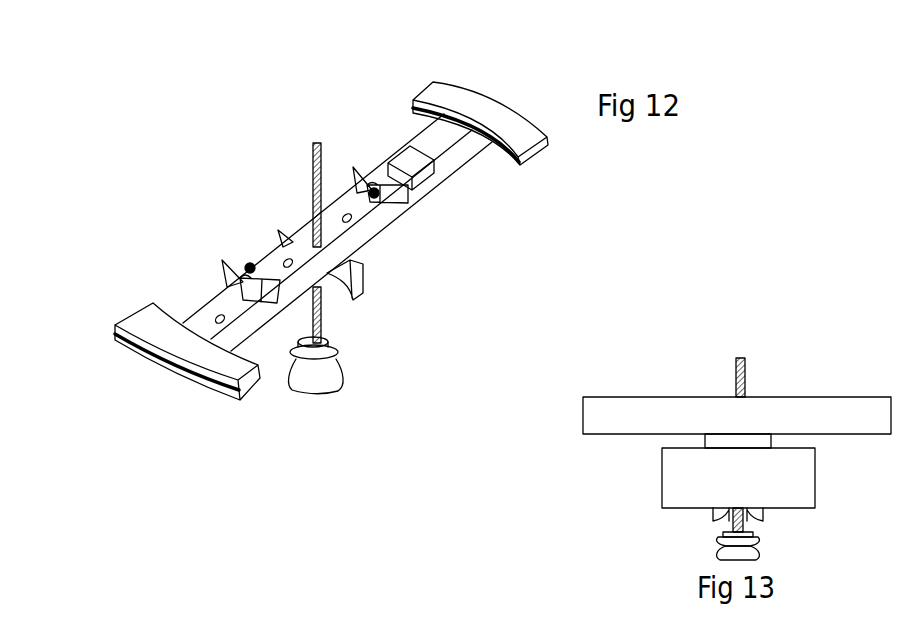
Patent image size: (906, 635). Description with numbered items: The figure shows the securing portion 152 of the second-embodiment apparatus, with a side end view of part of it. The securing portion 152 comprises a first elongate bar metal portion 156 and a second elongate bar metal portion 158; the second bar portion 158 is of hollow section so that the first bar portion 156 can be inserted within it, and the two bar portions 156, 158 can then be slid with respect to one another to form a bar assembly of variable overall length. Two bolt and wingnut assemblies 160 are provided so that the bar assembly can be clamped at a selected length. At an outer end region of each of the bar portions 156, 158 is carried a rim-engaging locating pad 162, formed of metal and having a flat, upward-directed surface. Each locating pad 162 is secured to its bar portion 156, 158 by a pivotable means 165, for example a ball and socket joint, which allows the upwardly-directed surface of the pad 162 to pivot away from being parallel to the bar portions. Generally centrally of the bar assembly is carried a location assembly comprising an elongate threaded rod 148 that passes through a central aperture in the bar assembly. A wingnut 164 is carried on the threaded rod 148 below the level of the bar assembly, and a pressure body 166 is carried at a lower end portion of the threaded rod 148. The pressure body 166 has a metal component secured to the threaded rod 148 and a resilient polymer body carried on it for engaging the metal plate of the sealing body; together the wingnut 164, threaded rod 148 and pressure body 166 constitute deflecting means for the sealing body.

In FIG. 12, the threaded rod 148 is at (310, 184).
In FIG. 13, the threaded rod 148 is at (748, 368).
In FIG. 12, the securing portion 152 is at (238, 230).
In FIG. 12, the first elongate bar metal portion 156 is at (458, 168).
In FIG. 12, the second elongate bar metal portion 158 is at (203, 308).
In FIG. 13, the second elongate bar metal portion 158 is at (683, 510).
In FIG. 12, the bolt and wingnut assembly 160 is at (355, 182).
In FIG. 12, the rim-engaging locating pad 162 is at (430, 80).
In FIG. 13, the rim-engaging locating pad 162 is at (600, 397).
In FIG. 12, the wingnut 164 is at (365, 278).
In FIG. 13, the wingnut 164 is at (767, 518).
In FIG. 13, the pivotable means 165 is at (705, 443).
In FIG. 12, the pressure body 166 is at (300, 394).
In FIG. 13, the pressure body 166 is at (763, 553).